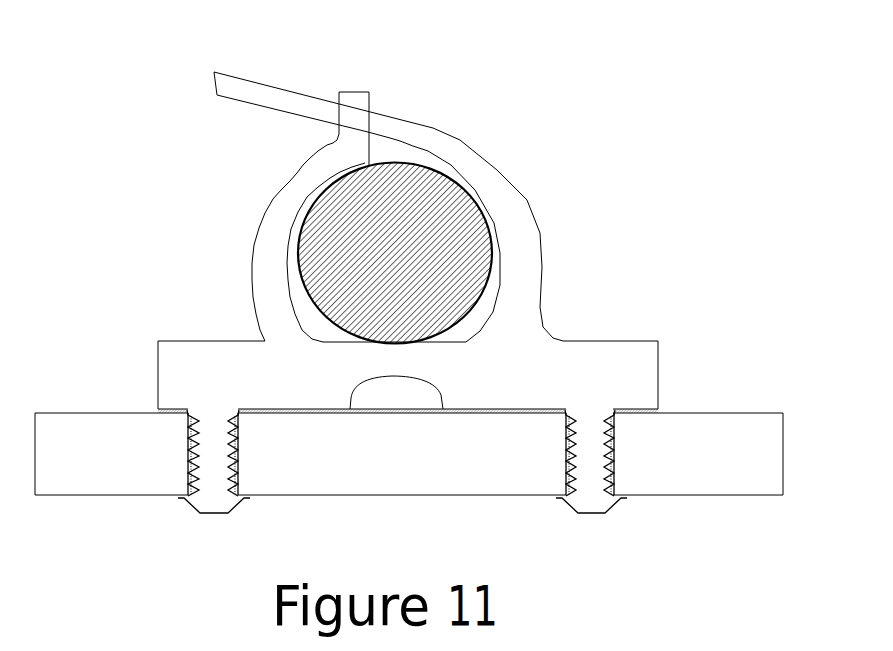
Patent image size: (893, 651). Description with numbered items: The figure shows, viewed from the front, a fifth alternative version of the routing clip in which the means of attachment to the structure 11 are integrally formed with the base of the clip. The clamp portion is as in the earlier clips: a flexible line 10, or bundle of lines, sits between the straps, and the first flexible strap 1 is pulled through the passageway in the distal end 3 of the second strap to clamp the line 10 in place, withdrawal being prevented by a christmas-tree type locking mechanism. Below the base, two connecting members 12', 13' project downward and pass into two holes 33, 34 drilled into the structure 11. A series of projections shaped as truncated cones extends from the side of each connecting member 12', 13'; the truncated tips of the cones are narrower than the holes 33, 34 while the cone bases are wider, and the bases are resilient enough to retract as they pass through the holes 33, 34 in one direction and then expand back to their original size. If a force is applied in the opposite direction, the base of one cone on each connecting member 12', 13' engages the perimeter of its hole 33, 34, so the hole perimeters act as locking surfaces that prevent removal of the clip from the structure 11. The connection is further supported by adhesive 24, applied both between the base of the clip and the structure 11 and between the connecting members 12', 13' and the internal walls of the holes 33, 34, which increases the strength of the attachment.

The first flexible strap 1 is at (267, 92).
The distal end 3 is at (350, 88).
The flexible line 10 is at (317, 233).
The structure 11 is at (106, 413).
The connecting member 12' is at (165, 473).
The connecting member 13' is at (594, 489).
The adhesive 24 is at (255, 413).
The hole 33 is at (238, 463).
The hole 34 is at (612, 458).